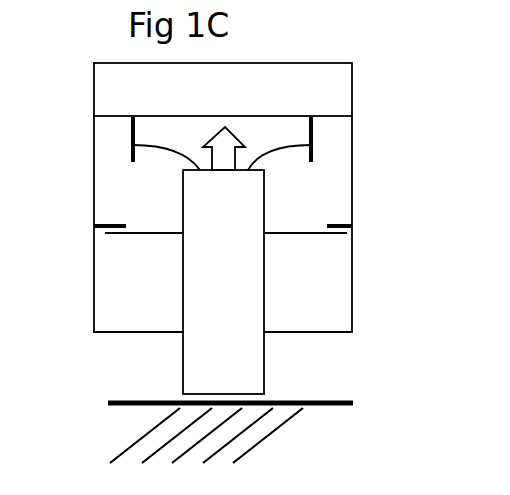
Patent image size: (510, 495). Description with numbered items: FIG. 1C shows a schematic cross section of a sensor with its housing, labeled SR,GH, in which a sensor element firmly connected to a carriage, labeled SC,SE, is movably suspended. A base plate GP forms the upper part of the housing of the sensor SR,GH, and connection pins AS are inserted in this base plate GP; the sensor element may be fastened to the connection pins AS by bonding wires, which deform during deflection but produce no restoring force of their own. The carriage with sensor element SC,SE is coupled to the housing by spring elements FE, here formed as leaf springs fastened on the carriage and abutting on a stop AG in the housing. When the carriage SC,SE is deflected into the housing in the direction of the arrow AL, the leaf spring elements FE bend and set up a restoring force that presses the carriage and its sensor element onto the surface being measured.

The base plate GP is at (332, 95).
The connection pins AS is at (133, 138).
The sensor / housing SR,GH is at (352, 147).
The stop AG is at (337, 229).
The spring element FE is at (303, 233).
The arrow AL is at (225, 127).
The carriage / sensor element SC,SE is at (233, 380).